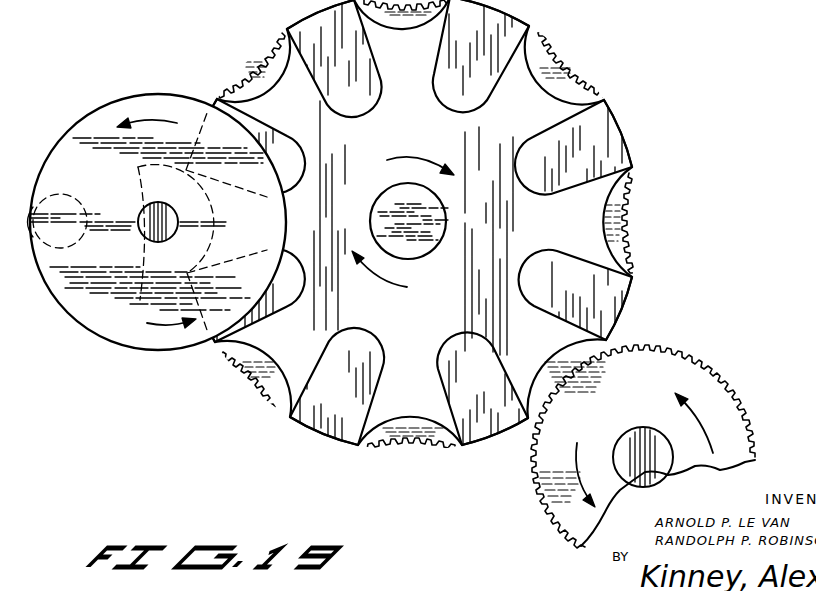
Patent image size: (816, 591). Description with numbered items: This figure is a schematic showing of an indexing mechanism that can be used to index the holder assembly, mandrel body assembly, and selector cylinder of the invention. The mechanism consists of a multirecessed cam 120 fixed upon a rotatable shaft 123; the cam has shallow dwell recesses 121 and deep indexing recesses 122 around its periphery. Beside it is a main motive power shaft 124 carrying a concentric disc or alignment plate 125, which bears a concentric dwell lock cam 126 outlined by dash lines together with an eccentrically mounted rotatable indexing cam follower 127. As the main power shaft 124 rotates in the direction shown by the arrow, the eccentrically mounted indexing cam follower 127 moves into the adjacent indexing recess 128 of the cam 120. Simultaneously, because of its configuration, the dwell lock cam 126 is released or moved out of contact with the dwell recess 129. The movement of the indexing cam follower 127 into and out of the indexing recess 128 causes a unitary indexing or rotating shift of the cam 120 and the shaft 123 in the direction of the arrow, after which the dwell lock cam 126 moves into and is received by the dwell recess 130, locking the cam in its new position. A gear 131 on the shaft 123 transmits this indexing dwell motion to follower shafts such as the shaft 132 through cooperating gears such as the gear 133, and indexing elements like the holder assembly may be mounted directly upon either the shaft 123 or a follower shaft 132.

The multirecessed cam 120 is at (426, 131).
The shallow dwell recesses 121 is at (543, 88).
The deep indexing recesses 122 is at (513, 277).
The rotatable shaft 123 is at (437, 221).
The main motive power shaft 124 is at (138, 214).
The alignment plate 125 is at (64, 312).
The dwell lock cam 126 is at (157, 278).
The indexing cam follower 127 is at (53, 193).
The indexing recess 128 is at (303, 284).
The dwell recess 129 is at (212, 244).
The dwell recess 130 is at (281, 367).
The gear 131 is at (628, 229).
The follower shaft 132 is at (666, 430).
The gear 133 is at (708, 360).